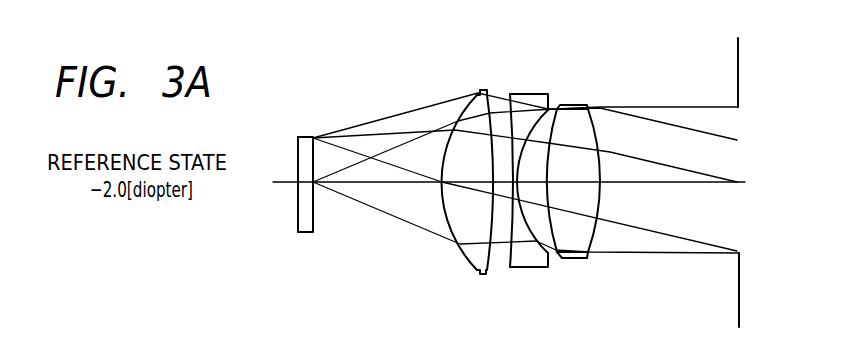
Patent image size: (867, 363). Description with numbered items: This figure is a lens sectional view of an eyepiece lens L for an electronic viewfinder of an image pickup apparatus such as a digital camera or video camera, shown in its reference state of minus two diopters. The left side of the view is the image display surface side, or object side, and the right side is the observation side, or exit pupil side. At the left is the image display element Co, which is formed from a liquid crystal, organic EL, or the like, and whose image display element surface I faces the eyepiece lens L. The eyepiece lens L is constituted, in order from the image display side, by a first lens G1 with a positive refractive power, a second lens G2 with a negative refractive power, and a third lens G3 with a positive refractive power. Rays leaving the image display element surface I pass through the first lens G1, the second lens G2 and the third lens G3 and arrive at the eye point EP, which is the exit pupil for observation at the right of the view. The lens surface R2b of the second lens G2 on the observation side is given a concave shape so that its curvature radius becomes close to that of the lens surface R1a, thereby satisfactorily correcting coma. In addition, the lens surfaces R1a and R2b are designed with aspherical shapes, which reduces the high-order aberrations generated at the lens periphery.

The image display element Co is at (306, 142).
The image display element surface I is at (298, 218).
The eyepiece lens L is at (587, 42).
The first lens G1 is at (457, 178).
The second lens G2 is at (556, 171).
The third lens G3 is at (573, 118).
The eye point EP is at (740, 62).
The lens surface R1a is at (453, 235).
The lens surface R2b is at (528, 233).